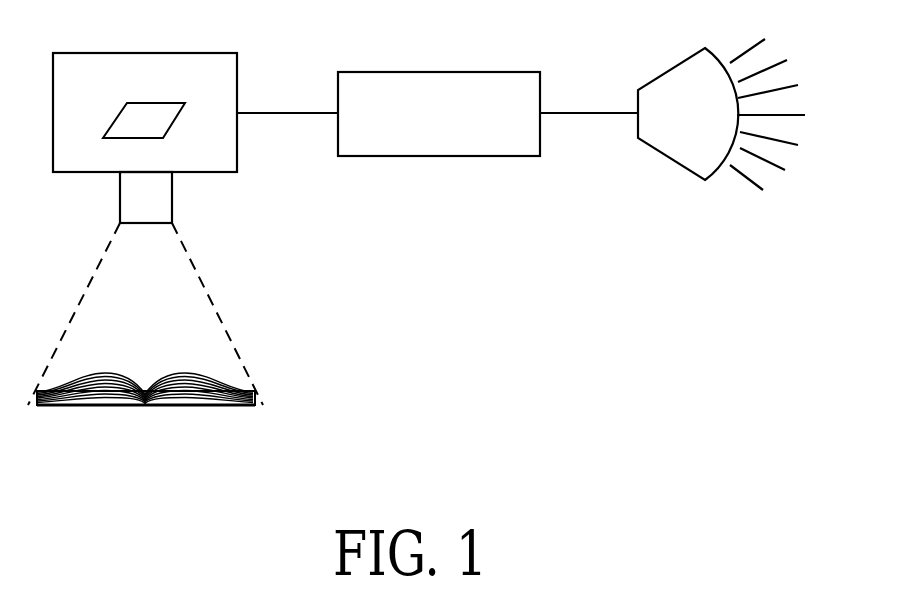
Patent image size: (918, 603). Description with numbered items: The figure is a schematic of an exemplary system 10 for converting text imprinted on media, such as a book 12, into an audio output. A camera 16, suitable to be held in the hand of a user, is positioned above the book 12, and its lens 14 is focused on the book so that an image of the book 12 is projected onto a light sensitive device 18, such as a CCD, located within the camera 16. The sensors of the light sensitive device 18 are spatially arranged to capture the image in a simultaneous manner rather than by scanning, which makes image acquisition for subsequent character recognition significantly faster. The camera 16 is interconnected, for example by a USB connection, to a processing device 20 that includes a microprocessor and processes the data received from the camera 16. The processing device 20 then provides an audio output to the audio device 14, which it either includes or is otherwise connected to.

The system 10 is at (470, 253).
The book 12 is at (203, 407).
The audio device / lens 14 is at (120, 202).
The camera 16 is at (185, 53).
The light sensitive device 18 is at (118, 123).
The processing device 20 is at (488, 72).